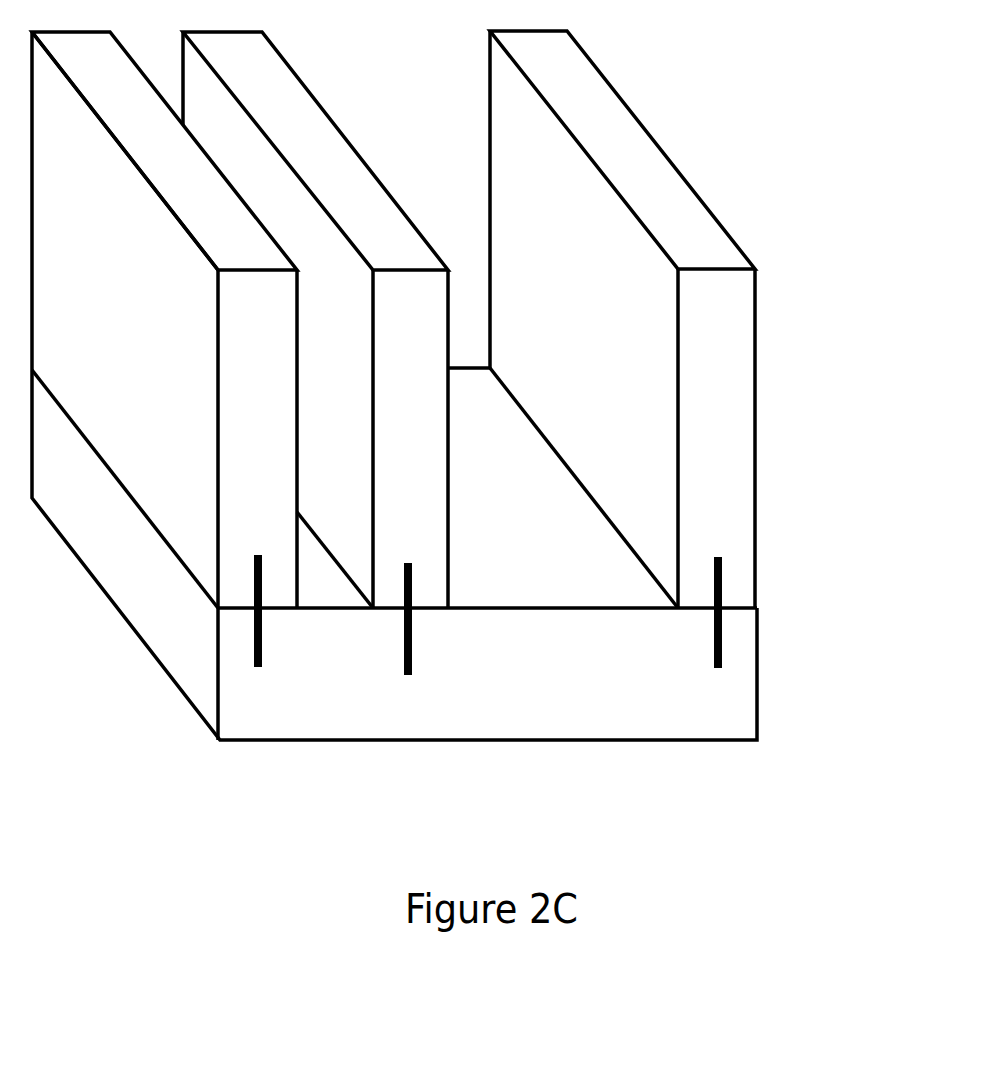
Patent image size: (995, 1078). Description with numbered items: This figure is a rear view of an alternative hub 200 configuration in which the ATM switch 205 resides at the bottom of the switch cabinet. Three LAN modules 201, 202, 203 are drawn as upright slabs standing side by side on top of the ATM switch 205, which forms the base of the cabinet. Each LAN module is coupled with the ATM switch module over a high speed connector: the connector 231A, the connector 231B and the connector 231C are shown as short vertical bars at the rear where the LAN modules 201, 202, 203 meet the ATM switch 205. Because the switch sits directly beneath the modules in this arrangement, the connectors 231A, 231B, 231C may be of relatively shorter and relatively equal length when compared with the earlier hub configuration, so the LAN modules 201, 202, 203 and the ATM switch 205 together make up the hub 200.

The hub 200 is at (732, 201).
The LAN module 201 is at (245, 420).
The LAN module 202 is at (415, 313).
The LAN module 203 is at (730, 410).
The ATM switch 205 is at (533, 740).
The connector 231A is at (263, 625).
The connector 231B is at (413, 625).
The connector 231C is at (712, 620).